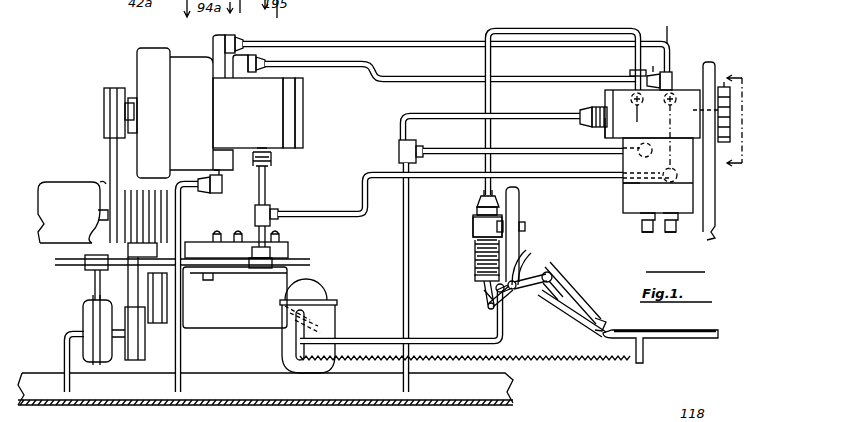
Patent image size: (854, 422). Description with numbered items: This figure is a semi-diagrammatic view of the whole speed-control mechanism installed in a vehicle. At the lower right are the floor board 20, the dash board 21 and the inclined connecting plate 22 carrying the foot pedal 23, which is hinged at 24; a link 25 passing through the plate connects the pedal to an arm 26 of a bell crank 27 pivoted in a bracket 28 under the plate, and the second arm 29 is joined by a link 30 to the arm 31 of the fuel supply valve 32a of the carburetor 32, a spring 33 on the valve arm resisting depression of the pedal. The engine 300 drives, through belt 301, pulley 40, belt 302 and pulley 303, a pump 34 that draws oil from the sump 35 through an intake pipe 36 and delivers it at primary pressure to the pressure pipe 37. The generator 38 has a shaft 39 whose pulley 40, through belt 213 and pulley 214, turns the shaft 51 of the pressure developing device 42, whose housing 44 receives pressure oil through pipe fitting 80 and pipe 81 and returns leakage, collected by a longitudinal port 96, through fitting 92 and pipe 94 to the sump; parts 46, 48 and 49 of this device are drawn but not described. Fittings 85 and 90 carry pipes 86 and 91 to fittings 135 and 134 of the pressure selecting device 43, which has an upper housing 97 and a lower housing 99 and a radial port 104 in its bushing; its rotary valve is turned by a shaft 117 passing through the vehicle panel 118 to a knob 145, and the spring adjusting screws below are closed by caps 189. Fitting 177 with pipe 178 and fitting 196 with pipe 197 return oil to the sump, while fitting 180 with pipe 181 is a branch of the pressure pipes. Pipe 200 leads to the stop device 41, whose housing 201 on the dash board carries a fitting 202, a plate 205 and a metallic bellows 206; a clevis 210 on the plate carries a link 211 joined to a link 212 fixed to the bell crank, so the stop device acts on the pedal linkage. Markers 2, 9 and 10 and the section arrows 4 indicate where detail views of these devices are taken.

The pipe 2 is at (482, 192).
The section line 4 is at (741, 120).
The pin 9 is at (658, 86).
The port 10 is at (636, 113).
The vehicle floor board 20 is at (695, 338).
The dash board 21 is at (520, 201).
The inclined connecting board or plate 22 is at (586, 322).
The foot pedal 23 is at (582, 295).
The hinge 24 is at (490, 310).
The link 25 is at (555, 300).
The arm of bell crank 26 is at (514, 296).
The bell crank 27 is at (495, 318).
The bracket 28 is at (532, 262).
The second arm of bell crank 29 is at (504, 333).
The link 30 is at (372, 338).
The arm of fuel supply valve 31 is at (290, 333).
The carburetor 32 is at (333, 304).
The fuel supply valve 32a is at (322, 290).
The spring 33 is at (563, 360).
The pump 34 is at (84, 316).
The sump, tank or oil pan 35 is at (275, 403).
The intake pipe 36 is at (60, 337).
The delivery or pressure pipe 37 is at (93, 286).
The electric generator 38 is at (44, 242).
The shaft 39 is at (97, 182).
The pulley 40 is at (138, 190).
The stop device 41 is at (473, 232).
The actuating pressure developing device 42 is at (297, 130).
The actuating pressure selecting device 43 is at (688, 90).
The housing 44 is at (190, 58).
The motor housing 46 is at (137, 60).
The ring 48 is at (300, 84).
The ring 49 is at (296, 99).
The shaft 51 is at (126, 112).
The pipe fitting 80 is at (270, 163).
The pipe 81 is at (266, 188).
The pipe fitting 85 is at (235, 38).
The pipe 86 is at (420, 43).
The pipe fitting 90 is at (258, 55).
The pipe or conduit 91 is at (417, 80).
The pipe fitting 92 is at (217, 193).
The pipe 94 is at (181, 232).
The port 96 is at (623, 184).
The upper housing member 97 is at (606, 130).
The lower housing member 99 is at (640, 207).
The radial port 104 is at (632, 62).
The shaft 117 is at (731, 110).
The panel 118 is at (716, 192).
The pipe fitting 134 is at (675, 74).
The pipe fitting 135 is at (676, 101).
The knob 145 is at (724, 86).
The pipe fitting 177 is at (650, 156).
The pipe or conduit 178 is at (569, 149).
The pipe fitting 180 is at (677, 172).
The pipe or conduit 181 is at (580, 178).
The cap 189 is at (672, 228).
The pipe fitting 196 is at (590, 108).
The pipe 197 is at (538, 114).
The pipe 200 is at (574, 28).
The housing member 201 is at (473, 224).
The pipe fitting 202 is at (478, 201).
The plate 205 is at (474, 278).
The metallic bellows 206 is at (476, 256).
The clevis 210 is at (480, 284).
The link 211 is at (484, 294).
The link 212 is at (488, 308).
The belt 213 is at (107, 150).
The pulley 214 is at (104, 92).
The engine 300 is at (283, 245).
The belt 301 is at (157, 250).
The belt 302 is at (80, 206).
The pulley 303 is at (138, 347).